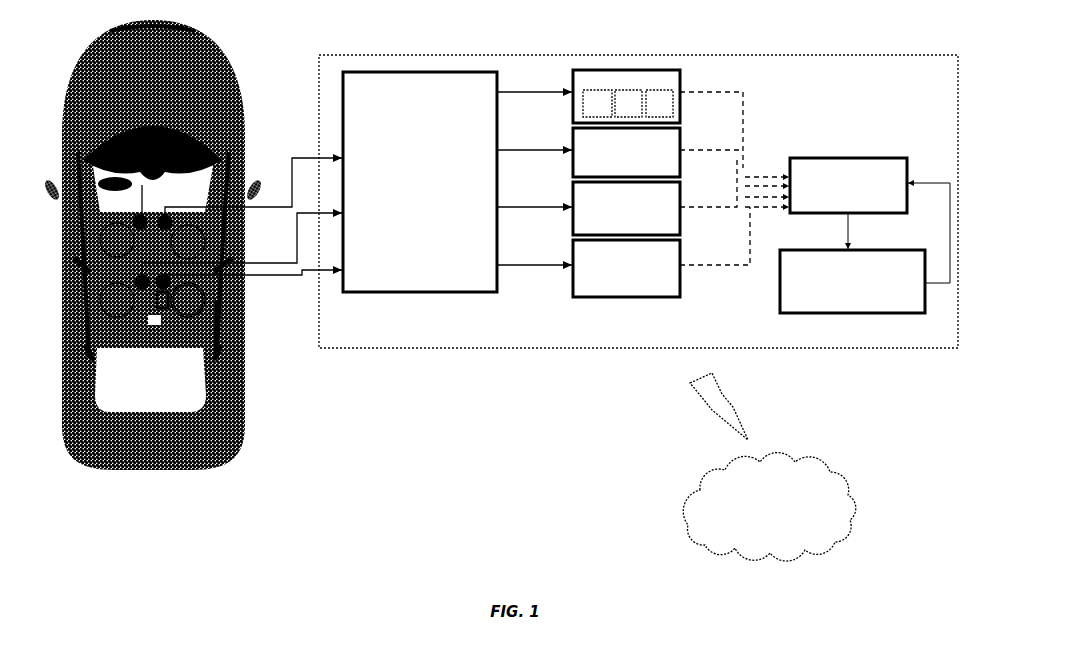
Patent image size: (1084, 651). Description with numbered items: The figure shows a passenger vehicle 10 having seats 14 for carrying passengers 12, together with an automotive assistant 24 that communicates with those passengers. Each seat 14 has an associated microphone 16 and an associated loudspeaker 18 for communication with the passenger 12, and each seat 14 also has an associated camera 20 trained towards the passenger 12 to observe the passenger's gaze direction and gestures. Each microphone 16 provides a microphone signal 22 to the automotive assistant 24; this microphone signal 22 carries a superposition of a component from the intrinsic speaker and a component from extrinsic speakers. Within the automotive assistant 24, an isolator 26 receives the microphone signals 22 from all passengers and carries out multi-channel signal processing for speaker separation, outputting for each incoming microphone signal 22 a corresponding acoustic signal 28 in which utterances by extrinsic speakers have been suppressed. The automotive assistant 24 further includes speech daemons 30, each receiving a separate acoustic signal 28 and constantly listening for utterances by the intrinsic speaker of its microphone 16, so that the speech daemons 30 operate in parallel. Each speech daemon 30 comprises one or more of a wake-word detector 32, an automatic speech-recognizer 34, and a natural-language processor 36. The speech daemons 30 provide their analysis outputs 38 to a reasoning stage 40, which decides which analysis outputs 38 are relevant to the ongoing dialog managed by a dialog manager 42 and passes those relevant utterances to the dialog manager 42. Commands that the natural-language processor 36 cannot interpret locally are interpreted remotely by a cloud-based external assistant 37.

The passenger vehicle 10 is at (153, 245).
The passenger 12 is at (190, 308).
The seat 14 is at (166, 318).
The microphone 16 is at (170, 284).
The loudspeaker 18 is at (212, 320).
The camera 20 is at (170, 325).
The microphone signal 22 is at (318, 156).
The automotive assistant 24 is at (638, 201).
The isolator 26 is at (420, 182).
The acoustic signal 28 is at (545, 270).
The speech daemon 30 is at (683, 86).
The wake-word detector 32 is at (597, 103).
The automatic speech-recognizer 34 is at (628, 103).
The natural-language processor 36 is at (659, 103).
The cloud-based external assistant 37 is at (769, 467).
The analysis output 38 is at (748, 272).
The reasoning stage 40 is at (870, 220).
The dialog manager 42 is at (852, 281).